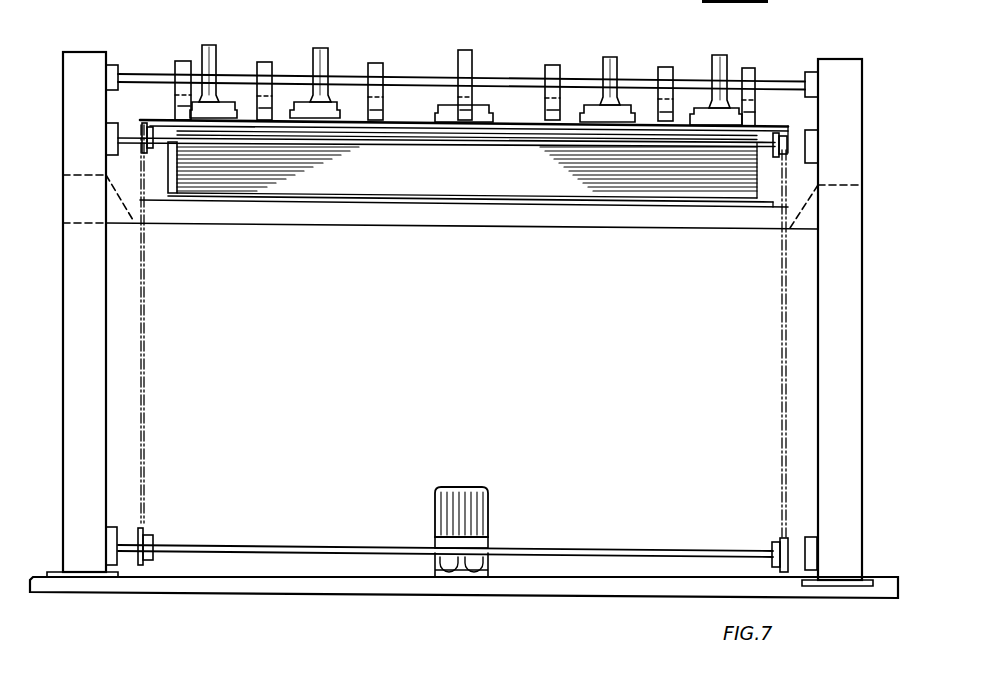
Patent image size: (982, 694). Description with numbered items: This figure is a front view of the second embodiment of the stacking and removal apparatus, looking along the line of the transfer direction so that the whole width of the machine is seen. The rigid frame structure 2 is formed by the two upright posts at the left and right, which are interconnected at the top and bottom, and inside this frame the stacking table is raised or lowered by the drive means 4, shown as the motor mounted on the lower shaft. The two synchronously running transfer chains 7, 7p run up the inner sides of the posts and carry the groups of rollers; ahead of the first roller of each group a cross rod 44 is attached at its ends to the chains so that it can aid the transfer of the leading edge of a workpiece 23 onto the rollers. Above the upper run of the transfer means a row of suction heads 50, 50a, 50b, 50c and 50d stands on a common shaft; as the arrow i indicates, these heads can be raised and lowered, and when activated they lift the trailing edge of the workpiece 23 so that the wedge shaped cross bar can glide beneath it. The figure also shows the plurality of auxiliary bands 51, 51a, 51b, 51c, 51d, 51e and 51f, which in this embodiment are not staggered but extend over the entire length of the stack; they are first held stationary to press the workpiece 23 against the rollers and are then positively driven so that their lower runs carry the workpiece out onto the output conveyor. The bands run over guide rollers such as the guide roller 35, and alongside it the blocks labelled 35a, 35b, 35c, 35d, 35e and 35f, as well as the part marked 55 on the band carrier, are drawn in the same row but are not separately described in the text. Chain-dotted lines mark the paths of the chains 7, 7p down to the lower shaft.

The frame structure 2 is at (850, 312).
The drive means 4 is at (485, 493).
The chain 7 is at (782, 340).
The chain 7p is at (145, 360).
The workpiece 23 is at (415, 118).
The guide roller 35 is at (756, 72).
The holder block 35a is at (667, 70).
The holder block 35b is at (575, 52).
The holder block 35c is at (472, 72).
The holder block 35d is at (378, 65).
The holder block 35e is at (297, 45).
The holder block 35f is at (183, 62).
The cross rod 44 is at (778, 128).
The suction head 50 is at (722, 58).
The suction head 50a is at (612, 57).
The suction head 50b is at (463, 50).
The suction head 50c is at (320, 52).
The suction head 50d is at (213, 50).
The auxiliary band 51 is at (755, 105).
The auxiliary band 51a is at (663, 117).
The auxiliary band 51b is at (552, 118).
The auxiliary band 51c is at (463, 115).
The auxiliary band 51d is at (380, 115).
The auxiliary band 51e is at (263, 112).
The auxiliary band 51f is at (183, 107).
The conveyor 55 is at (533, 92).
The arrow i is at (733, 46).